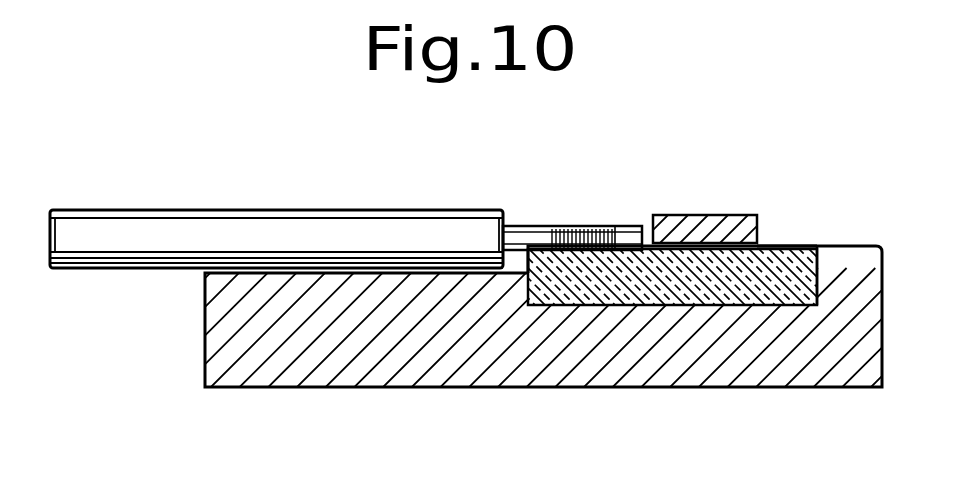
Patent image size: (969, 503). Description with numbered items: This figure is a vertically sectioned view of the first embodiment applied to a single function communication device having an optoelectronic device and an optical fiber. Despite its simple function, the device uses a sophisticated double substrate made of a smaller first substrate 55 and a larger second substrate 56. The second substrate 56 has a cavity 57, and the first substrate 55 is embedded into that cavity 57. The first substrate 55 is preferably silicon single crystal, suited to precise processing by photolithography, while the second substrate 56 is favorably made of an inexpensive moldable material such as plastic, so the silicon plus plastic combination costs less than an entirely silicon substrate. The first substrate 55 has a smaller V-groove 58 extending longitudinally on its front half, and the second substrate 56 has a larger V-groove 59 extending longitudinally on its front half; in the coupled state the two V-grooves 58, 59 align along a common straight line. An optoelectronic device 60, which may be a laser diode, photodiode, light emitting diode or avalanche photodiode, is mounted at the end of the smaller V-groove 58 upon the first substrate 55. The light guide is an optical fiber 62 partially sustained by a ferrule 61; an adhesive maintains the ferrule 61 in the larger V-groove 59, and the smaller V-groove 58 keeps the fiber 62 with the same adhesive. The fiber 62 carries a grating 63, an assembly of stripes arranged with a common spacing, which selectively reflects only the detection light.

The first substrate 55 is at (777, 250).
The second substrate 56 is at (742, 376).
The cavity 57 is at (839, 262).
The smaller V-groove 58 is at (548, 250).
The larger V-groove 59 is at (478, 272).
The optoelectronic device 60 is at (709, 221).
The ferrule 61 is at (357, 243).
The optical fiber 62 is at (630, 240).
The grating 63 is at (592, 232).